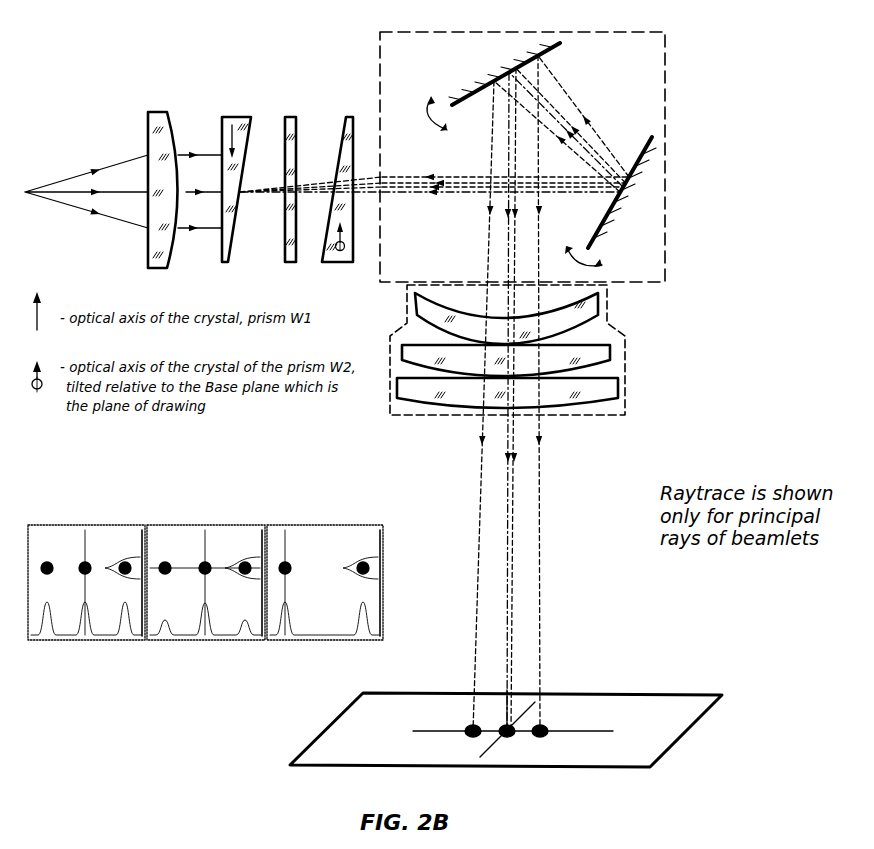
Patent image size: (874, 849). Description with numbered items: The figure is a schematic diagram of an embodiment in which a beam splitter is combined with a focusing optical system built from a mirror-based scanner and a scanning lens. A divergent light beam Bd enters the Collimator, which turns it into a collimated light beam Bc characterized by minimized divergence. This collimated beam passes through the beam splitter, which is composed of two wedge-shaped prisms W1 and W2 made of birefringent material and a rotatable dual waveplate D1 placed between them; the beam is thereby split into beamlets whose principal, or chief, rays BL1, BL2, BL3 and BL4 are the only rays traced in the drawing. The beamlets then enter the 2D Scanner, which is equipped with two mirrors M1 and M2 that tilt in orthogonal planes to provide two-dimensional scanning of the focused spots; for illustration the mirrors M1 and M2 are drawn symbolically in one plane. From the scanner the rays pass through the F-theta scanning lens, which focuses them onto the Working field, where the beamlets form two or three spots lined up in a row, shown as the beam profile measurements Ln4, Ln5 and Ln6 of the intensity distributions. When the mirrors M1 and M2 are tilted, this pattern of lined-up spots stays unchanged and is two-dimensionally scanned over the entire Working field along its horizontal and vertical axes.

The collimator Collimator is at (149, 113).
The divergent light beam Bd is at (86, 185).
The collimated light beam Bc is at (200, 183).
The wedge-shaped prism W1 is at (236, 117).
The rotatable dual waveplate D1 is at (291, 117).
The wedge-shaped prism W2 is at (349, 117).
The scanner mirror M1 is at (560, 46).
The scanner mirror M2 is at (652, 137).
The two-dimensional mirror scanner 2D Scanner is at (599, 157).
The F-theta scanning lens F-theta is at (626, 372).
The principal ray of beamlet BL1 is at (543, 487).
The principal ray of beamlet BL2 is at (514, 536).
The principal ray of beamlet BL3 is at (510, 535).
The principal ray of beamlet BL4 is at (482, 490).
The working field Working field is at (538, 713).
The line-shaped multi-spot pattern Ln4 is at (325, 598).
The line-shaped multi-spot pattern Ln5 is at (206, 598).
The line-shaped multi-spot pattern Ln6 is at (86, 598).